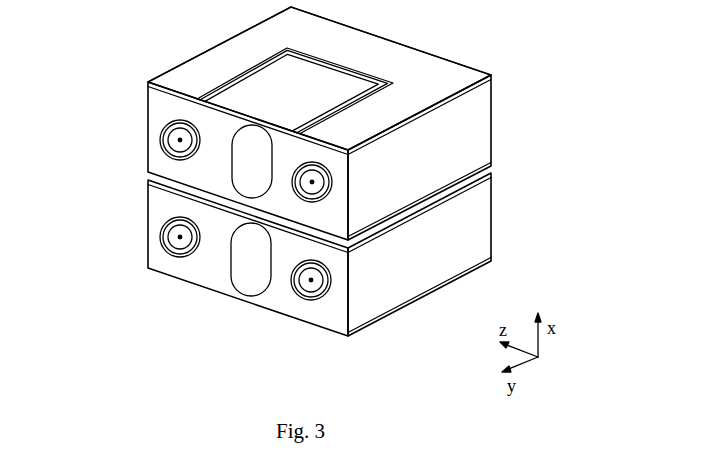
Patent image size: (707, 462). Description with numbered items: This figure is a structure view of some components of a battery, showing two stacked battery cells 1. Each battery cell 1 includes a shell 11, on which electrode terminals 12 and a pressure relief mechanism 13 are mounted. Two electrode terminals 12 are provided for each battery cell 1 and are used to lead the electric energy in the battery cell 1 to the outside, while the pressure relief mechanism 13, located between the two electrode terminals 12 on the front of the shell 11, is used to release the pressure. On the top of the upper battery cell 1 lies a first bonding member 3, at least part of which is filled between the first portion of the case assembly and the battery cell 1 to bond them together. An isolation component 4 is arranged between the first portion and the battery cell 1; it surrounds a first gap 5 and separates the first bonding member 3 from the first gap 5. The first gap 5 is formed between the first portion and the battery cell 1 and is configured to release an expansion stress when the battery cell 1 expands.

The battery cell 1 is at (71, 57).
The first bonding member 3 is at (232, 47).
The isolation component 4 is at (340, 64).
The first gap 5 is at (318, 101).
The shell 11 is at (150, 87).
The electrode terminal 12 is at (162, 131).
The pressure relief mechanism 13 is at (232, 172).